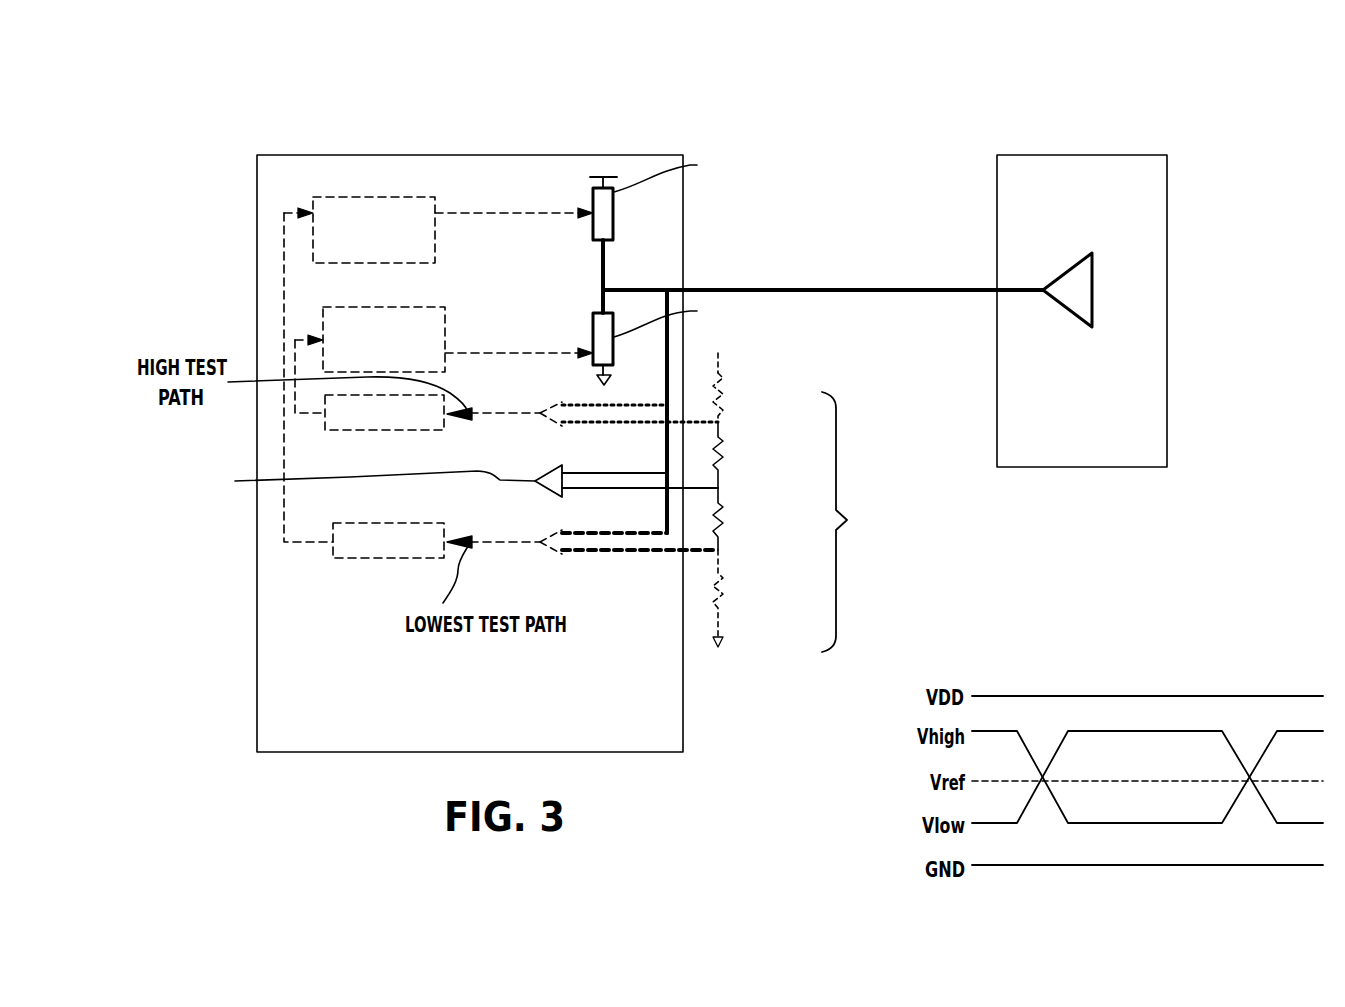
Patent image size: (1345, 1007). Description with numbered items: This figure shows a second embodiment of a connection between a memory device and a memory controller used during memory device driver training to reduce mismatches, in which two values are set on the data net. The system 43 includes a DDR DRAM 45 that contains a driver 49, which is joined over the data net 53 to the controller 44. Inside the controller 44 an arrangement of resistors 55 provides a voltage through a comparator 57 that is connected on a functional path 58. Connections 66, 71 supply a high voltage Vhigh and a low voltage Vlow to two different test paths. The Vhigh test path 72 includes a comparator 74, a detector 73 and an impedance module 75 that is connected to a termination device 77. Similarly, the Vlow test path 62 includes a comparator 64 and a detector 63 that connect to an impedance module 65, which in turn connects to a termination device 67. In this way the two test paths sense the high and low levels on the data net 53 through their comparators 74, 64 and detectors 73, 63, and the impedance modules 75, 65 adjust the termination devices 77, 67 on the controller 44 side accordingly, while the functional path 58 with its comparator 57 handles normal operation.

The system 43 is at (876, 119).
The controller 44 is at (578, 153).
The DDR DRAM 45 is at (1130, 154).
The driver 49 is at (1093, 270).
The data net 53 is at (935, 288).
The arrangement of resistors 55 is at (787, 490).
The comparator 57 is at (548, 471).
The functional path 58 is at (520, 480).
The Vlow test path 62 is at (492, 543).
The detector 63 is at (350, 523).
The comparator 64 is at (545, 547).
The impedance module 65 is at (328, 197).
The connection 66 is at (783, 553).
The termination device 67 is at (615, 201).
The connection 71 is at (783, 420).
The Vhigh test path 72 is at (510, 412).
The detector 73 is at (397, 431).
The comparator 74 is at (555, 405).
The impedance module 75 is at (340, 307).
The termination device 77 is at (616, 345).